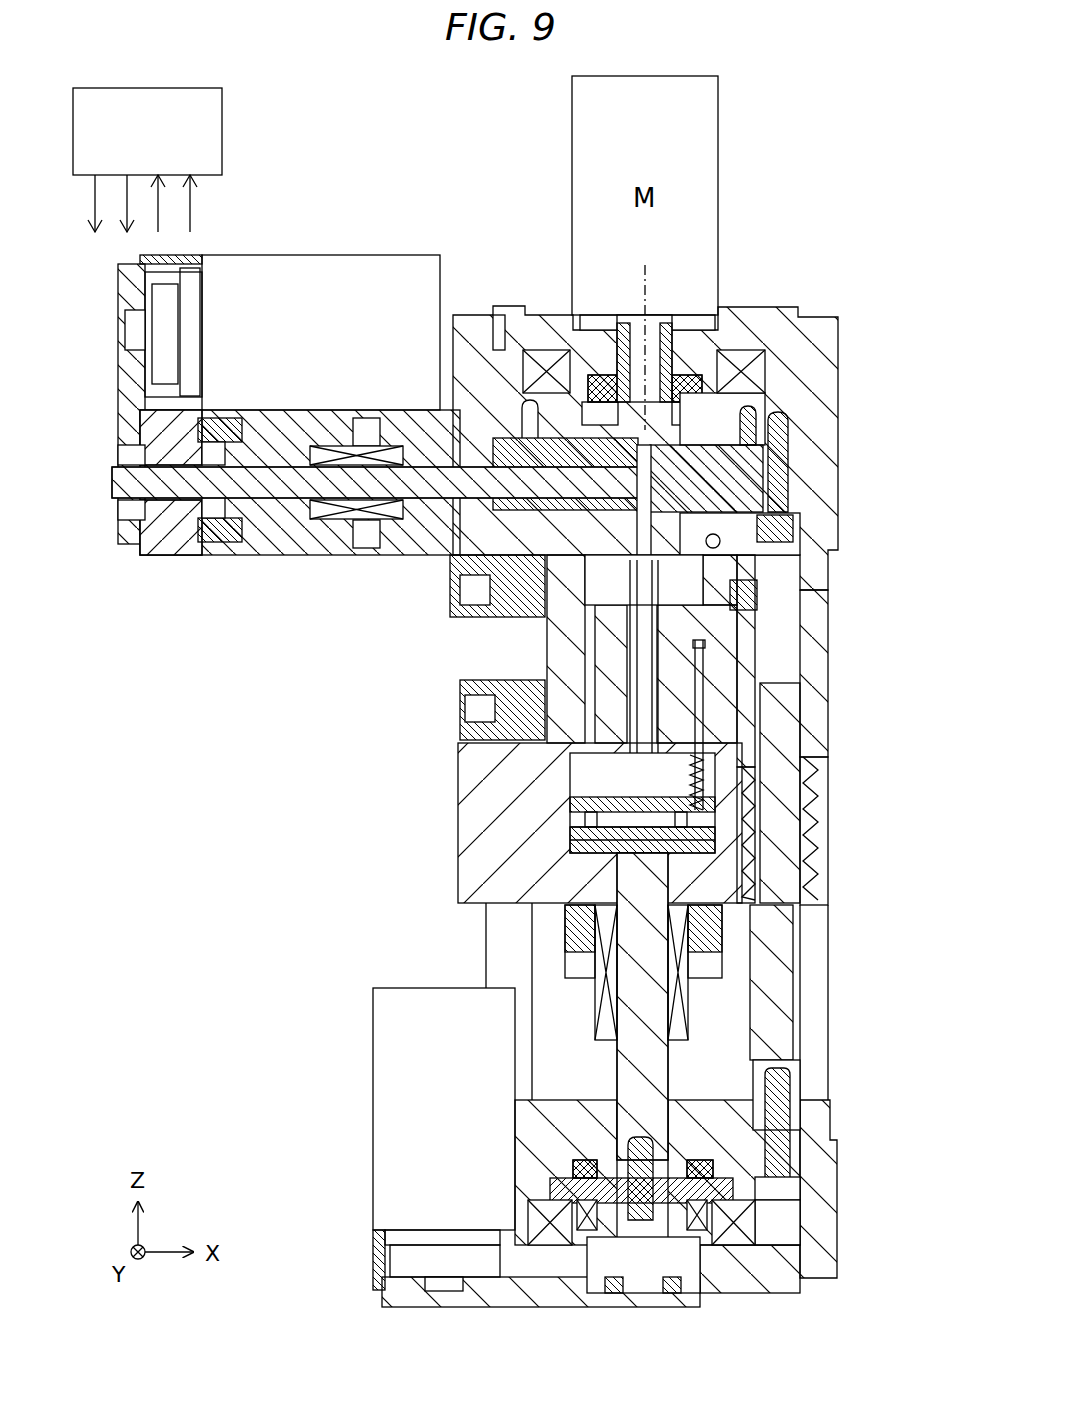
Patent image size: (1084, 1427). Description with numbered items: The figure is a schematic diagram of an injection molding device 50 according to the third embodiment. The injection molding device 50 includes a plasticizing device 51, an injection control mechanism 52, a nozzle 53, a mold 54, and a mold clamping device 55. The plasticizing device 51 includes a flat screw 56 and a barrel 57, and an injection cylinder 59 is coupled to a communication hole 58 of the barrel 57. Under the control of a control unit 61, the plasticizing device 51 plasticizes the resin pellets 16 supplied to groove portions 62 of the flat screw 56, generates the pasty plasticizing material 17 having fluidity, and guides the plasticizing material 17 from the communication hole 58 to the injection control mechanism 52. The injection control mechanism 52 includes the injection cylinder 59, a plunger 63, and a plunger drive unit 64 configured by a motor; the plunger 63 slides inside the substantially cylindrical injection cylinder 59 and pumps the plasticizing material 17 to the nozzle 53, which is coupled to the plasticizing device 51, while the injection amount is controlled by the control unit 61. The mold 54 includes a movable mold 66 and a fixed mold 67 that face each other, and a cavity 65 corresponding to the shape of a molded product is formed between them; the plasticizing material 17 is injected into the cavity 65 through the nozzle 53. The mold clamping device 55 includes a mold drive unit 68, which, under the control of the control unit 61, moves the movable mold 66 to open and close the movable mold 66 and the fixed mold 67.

The injection molding device 50 is at (340, 823).
The plasticizing device 51 is at (510, 280).
The injection control mechanism 52 is at (297, 622).
The nozzle 53 is at (795, 614).
The mold 54 is at (393, 693).
The mold clamping device 55 is at (420, 978).
The flat screw 56 is at (538, 350).
The barrel 57 is at (800, 465).
The communication hole 58 is at (800, 508).
The plasticizing material 17 is at (844, 520).
The injection cylinder 59 is at (580, 490).
The control unit 61 is at (222, 128).
The groove portions 62 is at (765, 378).
The resin pellets 16 is at (724, 360).
The plunger 63 is at (290, 498).
The plunger drive unit 64 is at (317, 272).
The cavity 65 is at (735, 668).
The movable mold 66 is at (530, 660).
The fixed mold 67 is at (530, 618).
The mold drive unit 68 is at (368, 1120).